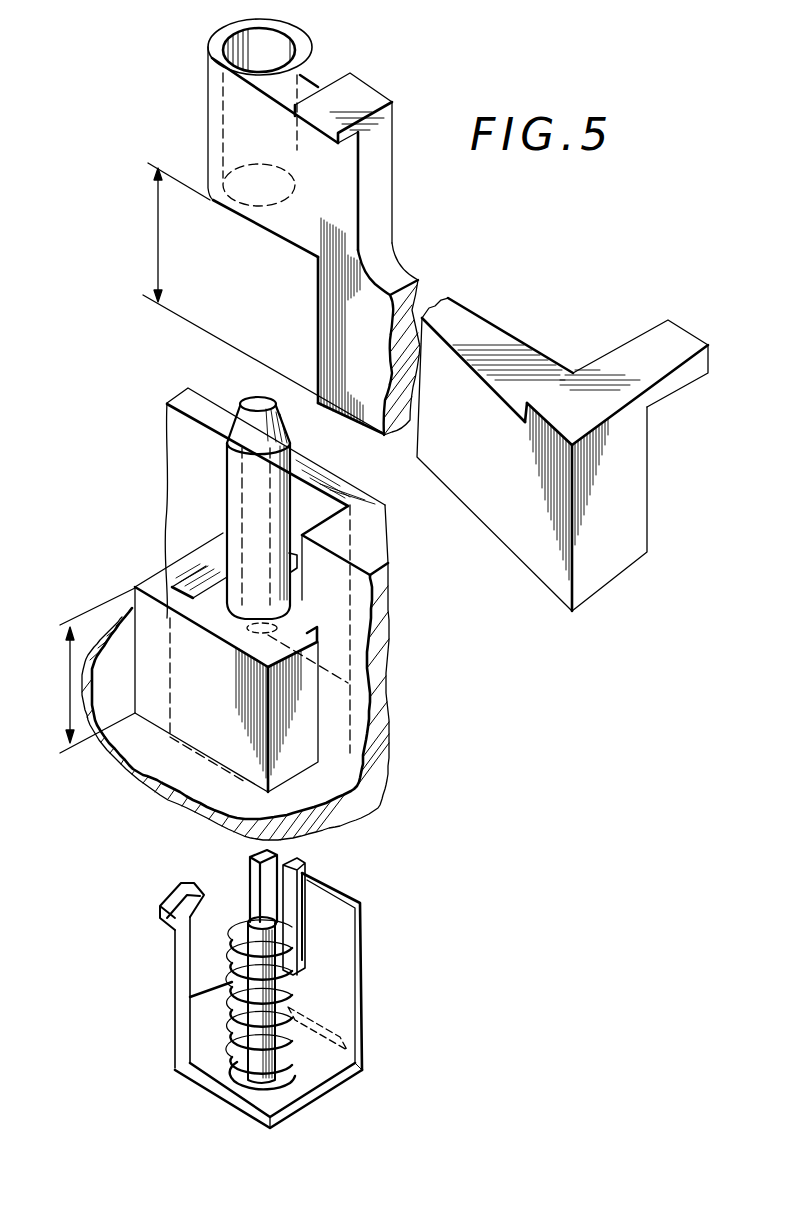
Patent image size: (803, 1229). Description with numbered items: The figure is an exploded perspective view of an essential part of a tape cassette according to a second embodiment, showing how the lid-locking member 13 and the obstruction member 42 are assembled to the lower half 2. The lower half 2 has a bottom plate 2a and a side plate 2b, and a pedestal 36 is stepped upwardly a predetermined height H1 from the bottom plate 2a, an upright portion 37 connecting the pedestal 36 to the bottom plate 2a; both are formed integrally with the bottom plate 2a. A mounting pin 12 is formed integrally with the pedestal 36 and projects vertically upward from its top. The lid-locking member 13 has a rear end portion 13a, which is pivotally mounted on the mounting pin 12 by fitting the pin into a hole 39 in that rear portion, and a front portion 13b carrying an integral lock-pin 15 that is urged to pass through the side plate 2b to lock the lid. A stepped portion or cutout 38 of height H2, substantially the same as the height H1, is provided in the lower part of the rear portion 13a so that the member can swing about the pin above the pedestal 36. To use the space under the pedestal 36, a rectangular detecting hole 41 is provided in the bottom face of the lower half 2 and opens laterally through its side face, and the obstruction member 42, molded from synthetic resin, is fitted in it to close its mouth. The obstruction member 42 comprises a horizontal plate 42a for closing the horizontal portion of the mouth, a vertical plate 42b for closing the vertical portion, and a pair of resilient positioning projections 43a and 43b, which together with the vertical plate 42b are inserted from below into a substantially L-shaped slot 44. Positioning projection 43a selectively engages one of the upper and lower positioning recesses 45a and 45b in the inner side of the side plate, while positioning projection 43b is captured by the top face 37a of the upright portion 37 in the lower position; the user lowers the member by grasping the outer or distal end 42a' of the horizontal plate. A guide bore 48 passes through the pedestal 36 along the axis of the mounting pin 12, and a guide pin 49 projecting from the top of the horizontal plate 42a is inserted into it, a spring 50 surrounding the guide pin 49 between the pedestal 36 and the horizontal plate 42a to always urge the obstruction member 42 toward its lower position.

The lower half 2 is at (389, 723).
The bottom plate 2a is at (330, 788).
The side plate 2b is at (180, 450).
The mounting pin 12 is at (252, 398).
The lid-locking member 13 is at (390, 261).
The rear end portion 13a is at (217, 95).
The front portion 13b is at (549, 555).
The lock-pin 15 is at (640, 348).
The pedestal 36 is at (300, 600).
The upright portion 37 is at (200, 707).
The top face of upright portion 37a is at (157, 583).
The stepped portion or cutout 38 is at (318, 318).
The hole 39 is at (282, 47).
The detecting hole 41 is at (214, 755).
The obstruction member 42 is at (368, 972).
The horizontal plate 42a is at (325, 1072).
The outer or distal end of horizontal plate 42a' is at (379, 1016).
The vertical plate 42b is at (340, 928).
The positioning projection 43a is at (293, 866).
The positioning projection 43b is at (172, 926).
The L-shaped slot 44 is at (240, 543).
The upper positioning recess 45a is at (315, 472).
The lower positioning recess 45b is at (292, 552).
The guide bore 48 is at (233, 420).
The guide pin 49 is at (262, 932).
The spring 50 is at (240, 1023).
The height of pedestal H1 is at (70, 682).
The height of stepped portion H2 is at (158, 214).